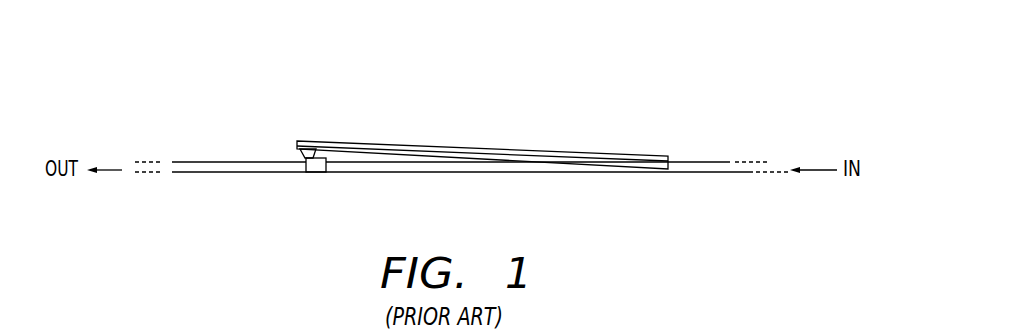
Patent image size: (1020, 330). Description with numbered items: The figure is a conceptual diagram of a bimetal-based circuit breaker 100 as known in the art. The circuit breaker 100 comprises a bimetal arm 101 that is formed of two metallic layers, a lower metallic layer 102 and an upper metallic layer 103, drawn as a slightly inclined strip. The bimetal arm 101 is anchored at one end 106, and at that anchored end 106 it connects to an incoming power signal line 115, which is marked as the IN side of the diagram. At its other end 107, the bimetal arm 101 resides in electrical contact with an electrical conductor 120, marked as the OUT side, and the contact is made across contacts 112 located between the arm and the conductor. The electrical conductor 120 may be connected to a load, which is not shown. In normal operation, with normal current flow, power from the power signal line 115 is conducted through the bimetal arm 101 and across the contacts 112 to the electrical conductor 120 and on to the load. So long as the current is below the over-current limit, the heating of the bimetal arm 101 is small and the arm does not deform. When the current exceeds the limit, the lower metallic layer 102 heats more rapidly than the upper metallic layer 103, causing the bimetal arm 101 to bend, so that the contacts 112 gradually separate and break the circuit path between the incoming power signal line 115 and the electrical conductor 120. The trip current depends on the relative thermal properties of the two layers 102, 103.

The circuit breaker 100 is at (610, 72).
The bimetal arm 101 is at (381, 134).
The lower metallic layer 102 is at (436, 163).
The upper metallic layer 103 is at (523, 151).
The anchored end 106 is at (660, 186).
The other end 107 is at (309, 132).
The contacts 112 is at (307, 173).
The incoming power signal line 115 is at (693, 162).
The electrical conductor 120 is at (230, 162).